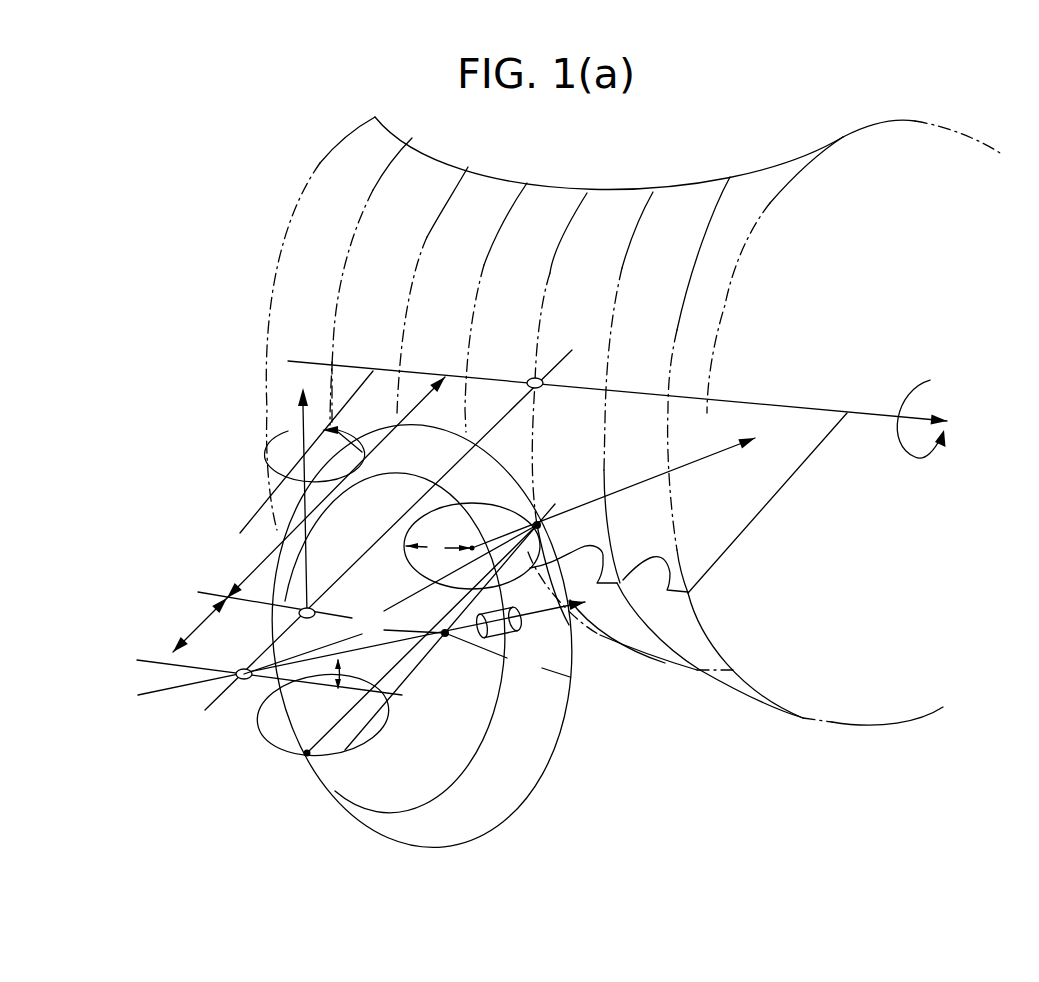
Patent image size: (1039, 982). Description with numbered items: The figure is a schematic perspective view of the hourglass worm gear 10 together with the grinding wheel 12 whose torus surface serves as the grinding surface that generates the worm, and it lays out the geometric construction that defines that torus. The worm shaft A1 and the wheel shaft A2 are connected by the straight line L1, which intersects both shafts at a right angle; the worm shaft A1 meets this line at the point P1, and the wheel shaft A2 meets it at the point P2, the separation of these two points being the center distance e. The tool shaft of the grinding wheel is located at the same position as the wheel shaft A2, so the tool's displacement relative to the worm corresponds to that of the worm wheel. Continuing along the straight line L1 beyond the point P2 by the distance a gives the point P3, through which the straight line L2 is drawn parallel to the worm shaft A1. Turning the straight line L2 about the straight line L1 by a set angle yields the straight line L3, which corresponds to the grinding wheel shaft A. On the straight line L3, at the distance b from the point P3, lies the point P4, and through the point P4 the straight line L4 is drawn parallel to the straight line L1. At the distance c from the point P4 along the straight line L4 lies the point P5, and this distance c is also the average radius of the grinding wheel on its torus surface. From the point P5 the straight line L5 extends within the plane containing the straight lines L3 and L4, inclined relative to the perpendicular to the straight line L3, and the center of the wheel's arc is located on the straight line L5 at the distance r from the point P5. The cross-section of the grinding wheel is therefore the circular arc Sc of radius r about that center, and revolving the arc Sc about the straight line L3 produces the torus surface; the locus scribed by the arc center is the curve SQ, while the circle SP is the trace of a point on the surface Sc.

The hourglass worm gear 10 is at (771, 170).
The grinding wheel 12 is at (443, 636).
The worm shaft A1 is at (757, 403).
The wheel shaft A2 is at (236, 473).
The intersection point of worm shaft and line L1 P1 is at (530, 379).
The intersection point of wheel shaft and line L1 P2 is at (298, 606).
The point on line L1 beyond P2 P3 is at (245, 690).
The point on line L3 P4 is at (445, 636).
The point on line L4 P5 is at (538, 522).
The common perpendicular straight line L1 is at (572, 352).
The straight line through P3 parallel to worm shaft L2 is at (150, 661).
The straight line corresponding to grinding wheel shaft L3 is at (198, 687).
The straight line through P4 parallel to L1 L4 is at (455, 607).
The inclined straight line through P5 L5 is at (690, 465).
The circular arc of grinding wheel section Sc is at (472, 523).
The circle traced by a point on surface Sc SP is at (566, 740).
The locus of point Q SQ is at (483, 763).
The distance from P2 to P3 a is at (309, 514).
The distance from P3 to P4 b is at (390, 599).
The distance from P4 to P5 c is at (507, 641).
The center distance e is at (359, 449).
The radius of circular arc Sc r is at (438, 543).
The grinding wheel shaft A is at (571, 662).